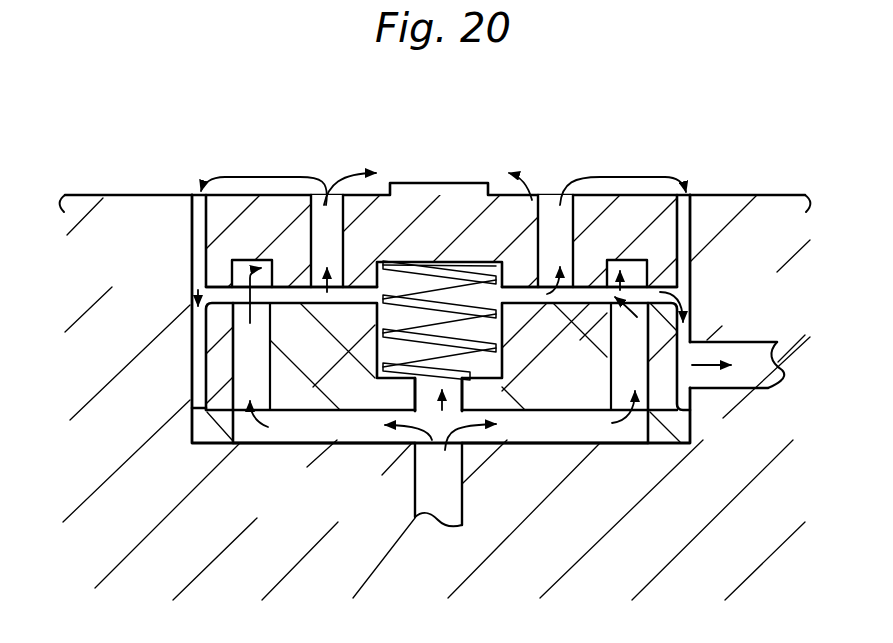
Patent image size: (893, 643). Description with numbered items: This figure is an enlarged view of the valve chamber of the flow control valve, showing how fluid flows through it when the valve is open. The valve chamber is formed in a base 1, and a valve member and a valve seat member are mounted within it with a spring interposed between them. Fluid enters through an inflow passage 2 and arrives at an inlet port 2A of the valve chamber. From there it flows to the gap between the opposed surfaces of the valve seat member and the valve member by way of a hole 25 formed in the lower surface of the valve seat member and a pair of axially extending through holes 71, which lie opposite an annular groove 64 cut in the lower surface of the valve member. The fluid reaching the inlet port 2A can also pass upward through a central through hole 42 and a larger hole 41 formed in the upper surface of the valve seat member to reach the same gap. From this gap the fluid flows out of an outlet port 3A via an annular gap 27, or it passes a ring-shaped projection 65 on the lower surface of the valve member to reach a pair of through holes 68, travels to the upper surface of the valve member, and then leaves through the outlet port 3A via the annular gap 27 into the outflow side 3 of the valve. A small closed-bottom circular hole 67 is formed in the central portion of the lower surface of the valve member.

The base 1 is at (742, 561).
The inflow passage 2 is at (455, 503).
The inlet port 2A is at (412, 448).
The outlet passage 3 is at (770, 390).
The outlet port 3A is at (697, 349).
The hole 25 is at (345, 443).
The annular gap 27 is at (190, 233).
The hole 41 is at (578, 378).
The through hole 42 is at (457, 397).
The annular groove 64 is at (247, 285).
The ring-shaped projection 65 is at (293, 297).
The circular hole 67 is at (355, 290).
The through holes 68 is at (330, 250).
The through holes 71 is at (242, 357).